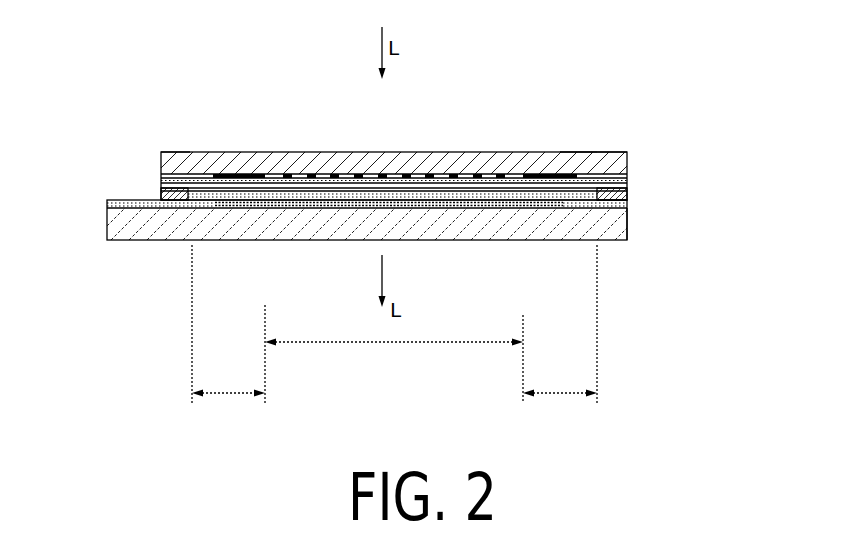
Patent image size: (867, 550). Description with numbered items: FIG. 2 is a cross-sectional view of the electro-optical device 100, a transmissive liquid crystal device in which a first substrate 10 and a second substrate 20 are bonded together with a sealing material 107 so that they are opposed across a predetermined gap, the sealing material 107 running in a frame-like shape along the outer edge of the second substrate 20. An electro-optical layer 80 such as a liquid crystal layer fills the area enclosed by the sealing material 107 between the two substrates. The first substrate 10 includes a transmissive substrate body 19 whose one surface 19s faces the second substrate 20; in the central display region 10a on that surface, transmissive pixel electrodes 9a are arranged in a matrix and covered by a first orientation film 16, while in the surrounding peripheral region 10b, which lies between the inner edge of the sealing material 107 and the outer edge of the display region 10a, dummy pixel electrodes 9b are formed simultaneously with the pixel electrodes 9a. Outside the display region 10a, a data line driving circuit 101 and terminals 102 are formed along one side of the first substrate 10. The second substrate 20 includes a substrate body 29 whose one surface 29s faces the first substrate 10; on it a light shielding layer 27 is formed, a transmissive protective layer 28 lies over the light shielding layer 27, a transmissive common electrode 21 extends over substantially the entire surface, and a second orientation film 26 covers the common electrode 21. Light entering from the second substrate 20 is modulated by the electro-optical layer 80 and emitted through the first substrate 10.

The electro-optical device 100 is at (603, 63).
The first substrate 10 is at (637, 219).
The display region 10a is at (394, 354).
The peripheral region 10b is at (394, 331).
The pixel electrodes 9a is at (415, 206).
The dummy pixel electrodes 9b is at (225, 206).
The first orientation film 16 is at (335, 197).
The substrate body 19 is at (628, 228).
The one surface 19s is at (177, 152).
The second substrate 20 is at (634, 152).
The common electrode 21 is at (425, 188).
The second orientation film 26 is at (470, 191).
The light shielding layer 27 is at (291, 174).
The protective layer 28 is at (323, 180).
The substrate body 29 is at (597, 152).
The one surface 29s is at (578, 152).
The electro-optical layer 80 is at (487, 193).
The data line driving circuit 101 is at (160, 201).
The terminals 102 is at (110, 200).
The sealing material 107 is at (178, 198).